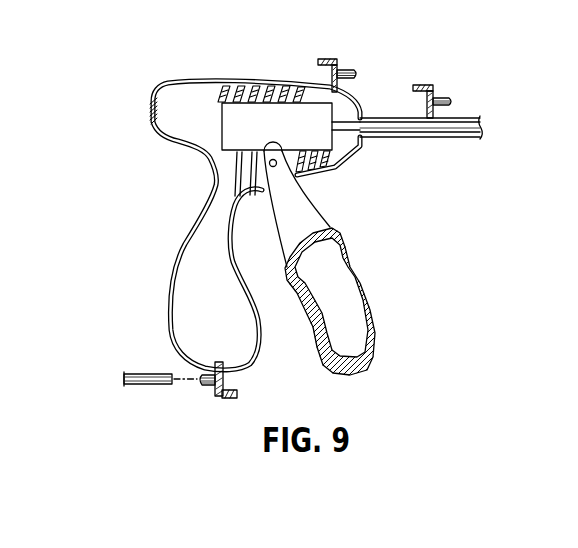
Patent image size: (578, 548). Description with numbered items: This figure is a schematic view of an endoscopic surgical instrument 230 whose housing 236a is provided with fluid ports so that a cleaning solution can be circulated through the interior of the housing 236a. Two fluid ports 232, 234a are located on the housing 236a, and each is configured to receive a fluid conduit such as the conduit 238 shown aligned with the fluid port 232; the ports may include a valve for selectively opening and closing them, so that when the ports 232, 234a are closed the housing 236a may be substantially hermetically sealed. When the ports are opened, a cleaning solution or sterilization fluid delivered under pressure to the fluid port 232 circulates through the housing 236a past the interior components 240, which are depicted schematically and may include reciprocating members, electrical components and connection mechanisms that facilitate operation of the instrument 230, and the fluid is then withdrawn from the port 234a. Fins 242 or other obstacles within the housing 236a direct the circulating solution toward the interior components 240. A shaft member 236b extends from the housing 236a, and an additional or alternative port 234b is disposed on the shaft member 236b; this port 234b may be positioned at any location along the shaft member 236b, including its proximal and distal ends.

The instrument 230 is at (137, 58).
The fluid port 232 is at (193, 390).
The fluid port 234a is at (352, 59).
The port 234b is at (444, 82).
The housing 236a is at (178, 282).
The shaft member 236b is at (390, 138).
The conduit 238 is at (143, 373).
The interior components 240 is at (232, 128).
The fins 242 is at (258, 90).